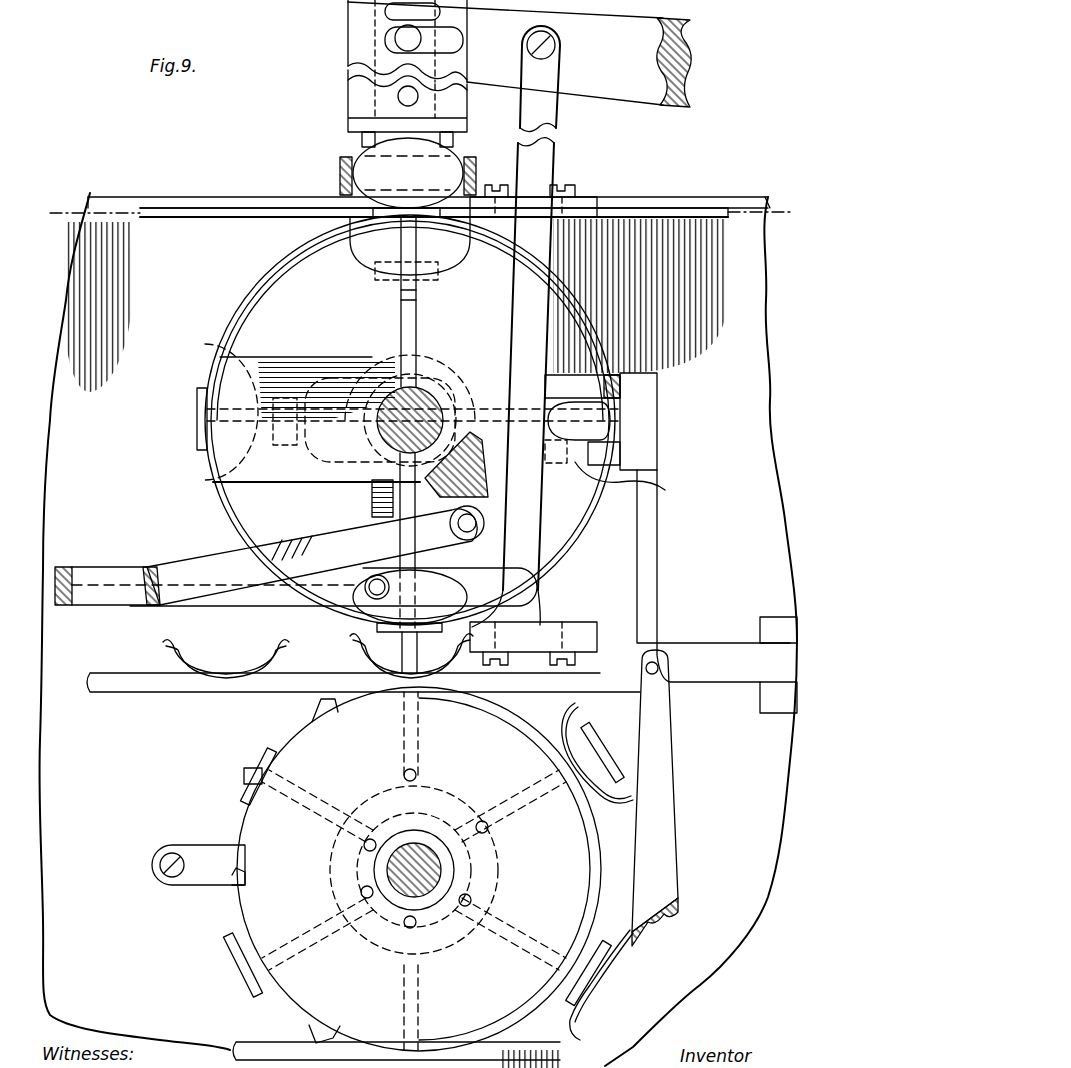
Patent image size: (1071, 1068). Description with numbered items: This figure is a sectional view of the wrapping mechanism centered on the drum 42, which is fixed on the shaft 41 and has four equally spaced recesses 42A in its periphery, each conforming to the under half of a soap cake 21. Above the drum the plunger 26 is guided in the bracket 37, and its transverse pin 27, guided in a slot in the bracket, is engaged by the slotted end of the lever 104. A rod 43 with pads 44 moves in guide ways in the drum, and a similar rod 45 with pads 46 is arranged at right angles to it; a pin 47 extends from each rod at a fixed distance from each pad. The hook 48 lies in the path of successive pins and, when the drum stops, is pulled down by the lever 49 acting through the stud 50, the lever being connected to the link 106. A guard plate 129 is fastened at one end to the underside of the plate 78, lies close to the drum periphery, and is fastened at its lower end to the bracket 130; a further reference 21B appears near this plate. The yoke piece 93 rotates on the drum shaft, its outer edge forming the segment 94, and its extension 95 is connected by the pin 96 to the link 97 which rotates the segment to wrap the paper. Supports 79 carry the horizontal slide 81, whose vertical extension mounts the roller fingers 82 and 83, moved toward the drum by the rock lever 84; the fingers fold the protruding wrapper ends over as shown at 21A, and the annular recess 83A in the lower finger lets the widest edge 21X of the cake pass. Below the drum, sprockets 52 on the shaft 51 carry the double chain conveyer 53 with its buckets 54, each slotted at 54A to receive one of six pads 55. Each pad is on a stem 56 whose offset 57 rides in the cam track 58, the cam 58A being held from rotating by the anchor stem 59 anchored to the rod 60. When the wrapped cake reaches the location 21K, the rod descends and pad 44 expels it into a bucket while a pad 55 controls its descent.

The soap cake 21 is at (452, 155).
The folded end portions 21A is at (510, 352).
The bar 21B is at (262, 200).
The wrapped cake location 21K is at (378, 612).
The edge of maximum dimension of the cake 21X is at (338, 164).
The plunger 26 is at (348, 100).
The pin 27 is at (412, 42).
The bracket 37 is at (348, 18).
The shaft 41 is at (428, 392).
The drum 42 is at (410, 420).
The recesses 42A is at (435, 262).
The rod 43 is at (414, 228).
The pads 44 is at (390, 218).
The rod 45 is at (220, 416).
The pads 46 is at (197, 402).
The pin 47 is at (401, 296).
The hook 48 is at (372, 508).
The lever 49 is at (250, 598).
The stud 50 is at (390, 587).
The shaft 51 is at (420, 858).
The sprockets 52 is at (238, 870).
The double chain conveyer 53 is at (180, 694).
The buckets 54 is at (162, 646).
The slotted-out center portion 54A is at (558, 712).
The pads 55 is at (598, 728).
The stem 56 is at (508, 808).
The offset 57 is at (490, 830).
The cam track 58 is at (445, 920).
The cam 58A is at (407, 790).
The anchor stem 59 is at (224, 885).
The rod 60 is at (165, 874).
The plate 78 is at (236, 210).
The block 79 is at (780, 622).
The horizontal slide 81 is at (708, 660).
The roller finger 82 is at (640, 398).
The roller finger 83 is at (612, 455).
The annular recess 83A is at (612, 480).
The rock lever 84 is at (668, 805).
The yoke piece 93 is at (258, 480).
The segment 94 is at (236, 310).
The extension 95 is at (470, 478).
The pin 96 is at (482, 530).
The link 97 is at (210, 548).
The lever 104 is at (685, 70).
The link 106 is at (548, 160).
The guard plate 129 is at (545, 268).
The bracket 130 is at (590, 636).